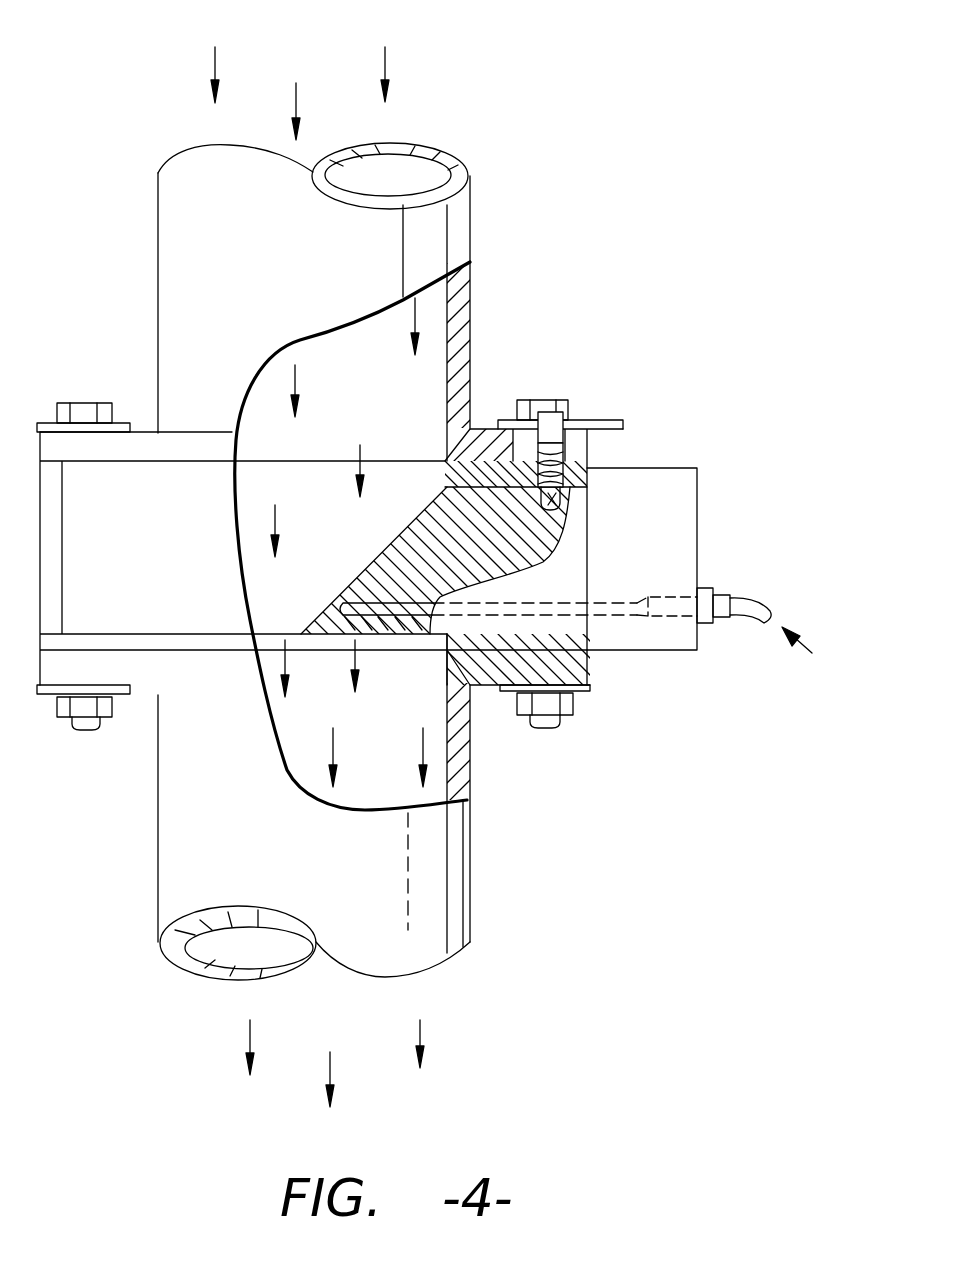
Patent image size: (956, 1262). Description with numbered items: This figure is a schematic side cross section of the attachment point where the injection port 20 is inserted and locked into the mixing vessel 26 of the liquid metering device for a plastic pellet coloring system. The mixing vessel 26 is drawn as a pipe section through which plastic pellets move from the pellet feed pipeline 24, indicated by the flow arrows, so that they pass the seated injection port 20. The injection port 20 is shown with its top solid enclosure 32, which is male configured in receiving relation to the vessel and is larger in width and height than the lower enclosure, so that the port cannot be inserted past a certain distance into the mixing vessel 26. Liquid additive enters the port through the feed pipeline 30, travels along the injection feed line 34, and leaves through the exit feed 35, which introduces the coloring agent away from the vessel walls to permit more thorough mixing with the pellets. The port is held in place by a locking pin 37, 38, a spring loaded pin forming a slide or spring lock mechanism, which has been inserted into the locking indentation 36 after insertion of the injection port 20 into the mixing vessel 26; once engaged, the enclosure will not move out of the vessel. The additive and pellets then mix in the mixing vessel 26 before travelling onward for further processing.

The injection port 20 is at (695, 398).
The plastic pellet feed pipeline 24 is at (470, 222).
The mixing vessel 26 is at (148, 478).
The feed pipeline 30 is at (752, 603).
The top solid enclosure 32 is at (697, 540).
The injection feed line 34 is at (607, 613).
The exit feed 35 is at (357, 618).
The locking indentation 36 is at (560, 496).
The locking pin 37 is at (603, 420).
The locking pin 38 is at (562, 512).